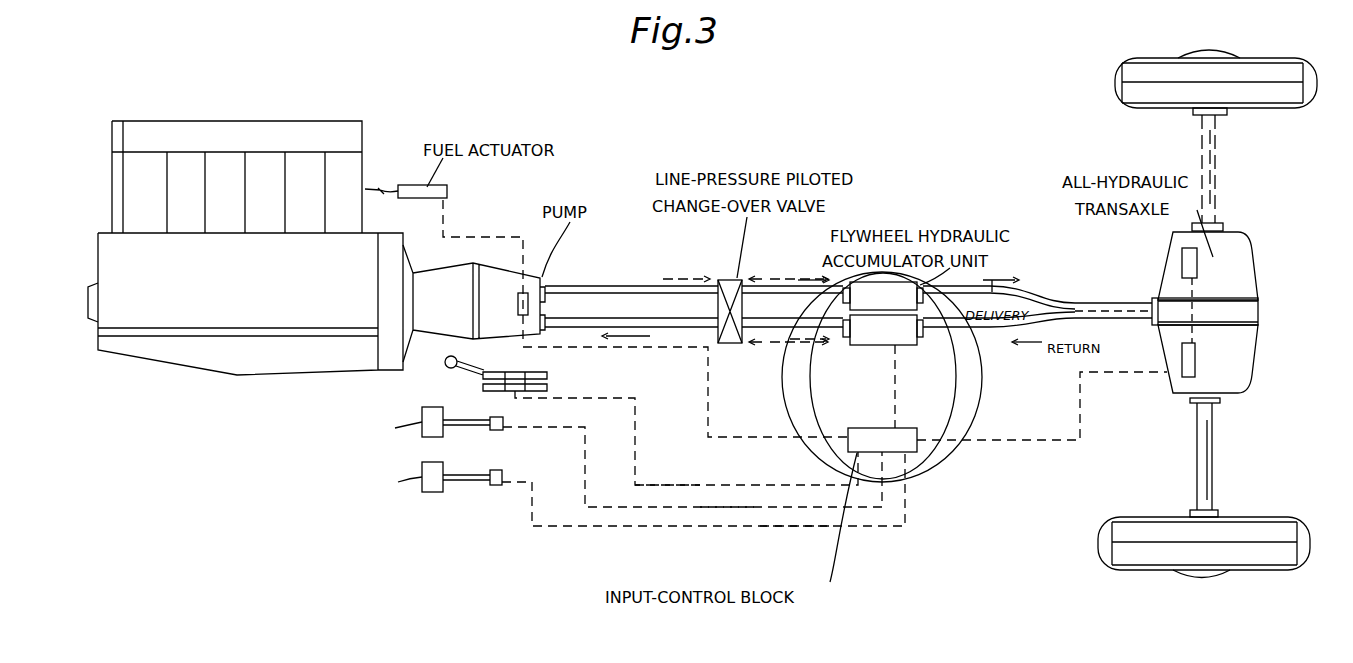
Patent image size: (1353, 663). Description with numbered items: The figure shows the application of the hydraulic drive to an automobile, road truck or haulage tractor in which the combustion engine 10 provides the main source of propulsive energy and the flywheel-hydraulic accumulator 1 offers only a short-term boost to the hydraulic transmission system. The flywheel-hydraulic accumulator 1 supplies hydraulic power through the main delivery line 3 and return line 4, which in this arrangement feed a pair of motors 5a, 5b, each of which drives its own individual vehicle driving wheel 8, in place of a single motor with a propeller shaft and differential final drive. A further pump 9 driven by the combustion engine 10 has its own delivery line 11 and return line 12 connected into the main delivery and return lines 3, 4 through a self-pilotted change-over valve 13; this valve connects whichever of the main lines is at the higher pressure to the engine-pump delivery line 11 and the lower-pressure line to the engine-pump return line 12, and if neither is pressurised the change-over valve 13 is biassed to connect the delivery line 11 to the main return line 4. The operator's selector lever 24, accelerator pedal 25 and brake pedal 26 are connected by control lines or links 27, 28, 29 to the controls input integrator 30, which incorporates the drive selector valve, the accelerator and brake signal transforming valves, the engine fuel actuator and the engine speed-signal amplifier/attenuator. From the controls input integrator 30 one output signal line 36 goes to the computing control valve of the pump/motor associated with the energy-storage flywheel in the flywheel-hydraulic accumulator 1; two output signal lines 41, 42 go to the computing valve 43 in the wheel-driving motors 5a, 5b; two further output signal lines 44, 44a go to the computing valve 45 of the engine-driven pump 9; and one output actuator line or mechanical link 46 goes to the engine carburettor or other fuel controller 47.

The flywheel-hydraulic accumulator 1 is at (847, 368).
The delivery line 3 is at (1040, 293).
The return line 4 is at (1005, 348).
The motor 5a is at (1240, 242).
The motor 5b is at (1235, 378).
The vehicle driving wheels 8 is at (1153, 75).
The pump 9 is at (446, 314).
The combustion engine 10 is at (257, 295).
The delivery line 11 is at (628, 288).
The return line 12 is at (637, 323).
The self-pilotted change-over valve 13 is at (735, 283).
The selector lever 24 is at (448, 368).
The accelerator pedal 25 is at (422, 435).
The brake pedal 26 is at (422, 490).
The control line or link 27 is at (660, 484).
The control line or link 28 is at (700, 504).
The control line or link 29 is at (768, 524).
The controls input integrator 30 is at (913, 452).
The output signal line 36 is at (897, 378).
The output signal line 41 is at (1117, 380).
The output signal line 42 is at (974, 443).
The computing valve 43 is at (1182, 262).
The output signal line 44 is at (685, 392).
The output signal line 44a is at (708, 368).
The computing valve 45 is at (530, 298).
The output actuator line or mechanical link 46 is at (487, 231).
The fuel controller 47 is at (405, 185).